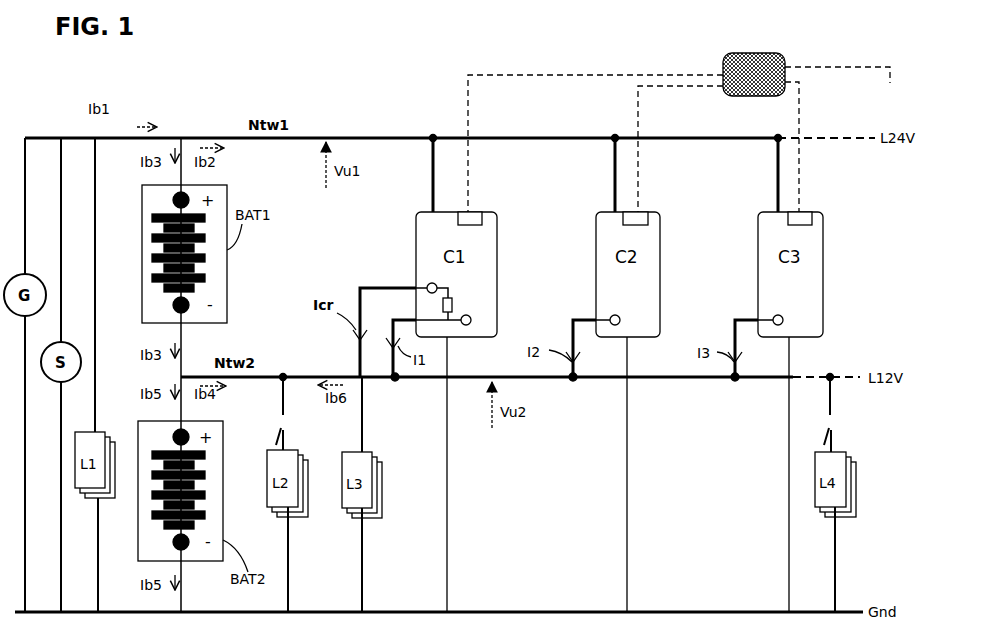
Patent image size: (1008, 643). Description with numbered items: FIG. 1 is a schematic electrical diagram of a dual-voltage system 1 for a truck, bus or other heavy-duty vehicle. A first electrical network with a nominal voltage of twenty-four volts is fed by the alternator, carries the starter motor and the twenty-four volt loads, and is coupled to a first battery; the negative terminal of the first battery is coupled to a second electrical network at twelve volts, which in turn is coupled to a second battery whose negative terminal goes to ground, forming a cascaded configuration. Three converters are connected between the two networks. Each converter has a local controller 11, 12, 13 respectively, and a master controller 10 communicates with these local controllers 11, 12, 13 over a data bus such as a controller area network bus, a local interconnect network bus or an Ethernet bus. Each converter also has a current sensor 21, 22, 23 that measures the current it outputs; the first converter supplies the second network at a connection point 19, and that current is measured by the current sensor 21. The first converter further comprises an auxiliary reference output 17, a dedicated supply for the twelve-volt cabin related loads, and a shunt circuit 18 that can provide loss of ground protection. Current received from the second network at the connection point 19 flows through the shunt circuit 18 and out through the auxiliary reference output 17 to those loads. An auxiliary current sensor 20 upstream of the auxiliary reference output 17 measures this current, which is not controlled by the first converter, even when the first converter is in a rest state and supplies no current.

The system 1 is at (370, 95).
The master controller 10 is at (723, 58).
The local controller 11 is at (470, 212).
The local controller 12 is at (636, 212).
The local controller 13 is at (800, 212).
The auxiliary reference output 17 is at (410, 286).
The shunt circuit 18 is at (455, 303).
The connection point 19 is at (398, 381).
The auxiliary current sensor 20 is at (429, 283).
The current sensor 21 is at (471, 327).
The current sensor 22 is at (612, 316).
The current sensor 23 is at (775, 316).